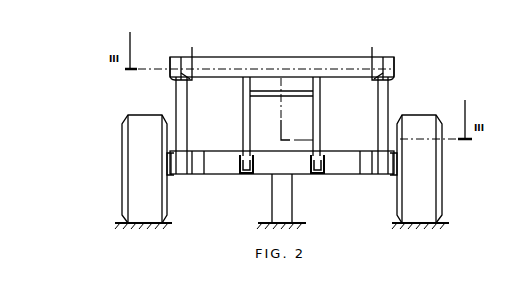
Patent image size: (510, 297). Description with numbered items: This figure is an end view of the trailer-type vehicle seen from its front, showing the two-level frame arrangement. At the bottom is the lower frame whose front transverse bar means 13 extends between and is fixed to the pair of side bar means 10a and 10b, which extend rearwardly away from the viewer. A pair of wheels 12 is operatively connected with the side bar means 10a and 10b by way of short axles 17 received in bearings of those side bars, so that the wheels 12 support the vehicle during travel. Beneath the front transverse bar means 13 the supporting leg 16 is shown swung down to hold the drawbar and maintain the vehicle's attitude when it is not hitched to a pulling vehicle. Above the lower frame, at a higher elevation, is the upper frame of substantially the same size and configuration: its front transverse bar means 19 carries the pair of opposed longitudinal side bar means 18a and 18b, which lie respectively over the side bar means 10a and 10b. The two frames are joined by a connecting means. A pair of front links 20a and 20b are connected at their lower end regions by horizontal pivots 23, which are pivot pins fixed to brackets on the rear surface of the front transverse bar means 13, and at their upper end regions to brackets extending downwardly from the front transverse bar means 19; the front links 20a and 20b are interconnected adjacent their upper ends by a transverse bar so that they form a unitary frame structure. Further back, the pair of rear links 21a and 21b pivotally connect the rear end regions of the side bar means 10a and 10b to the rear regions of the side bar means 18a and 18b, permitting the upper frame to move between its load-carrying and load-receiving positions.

The side bar means 10a is at (372, 176).
The side bar means 10b is at (195, 176).
The wheels 12 is at (122, 163).
The front transverse bar means 13 is at (222, 175).
The supporting leg 16 is at (292, 194).
The short axles 17 is at (384, 179).
The longitudinal side bar means 18a is at (390, 58).
The longitudinal side bar means 18b is at (172, 60).
The front transverse bar means 19 is at (338, 79).
The front link 20a is at (320, 117).
The front link 20b is at (243, 98).
The rear link 21a is at (388, 95).
The rear link 21b is at (187, 127).
The horizontal pivots 23 is at (245, 176).